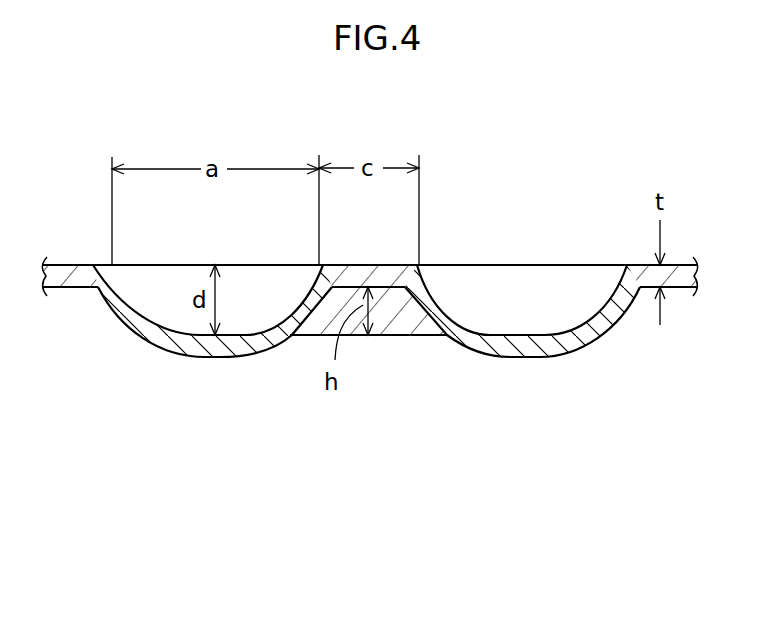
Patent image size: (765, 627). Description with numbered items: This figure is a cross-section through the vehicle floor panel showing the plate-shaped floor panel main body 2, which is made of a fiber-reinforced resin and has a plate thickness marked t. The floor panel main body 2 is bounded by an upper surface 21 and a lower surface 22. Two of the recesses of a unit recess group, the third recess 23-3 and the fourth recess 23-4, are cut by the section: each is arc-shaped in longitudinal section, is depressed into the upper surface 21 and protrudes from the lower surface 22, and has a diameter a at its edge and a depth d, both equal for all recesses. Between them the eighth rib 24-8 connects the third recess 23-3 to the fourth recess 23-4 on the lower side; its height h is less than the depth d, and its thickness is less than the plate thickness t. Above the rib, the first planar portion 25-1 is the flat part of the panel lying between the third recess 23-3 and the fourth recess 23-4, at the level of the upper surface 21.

The floor panel main body 2 is at (549, 206).
The upper surface 21 is at (68, 262).
The lower surface 22 is at (62, 290).
The third recess 23-3 is at (557, 326).
The fourth recess 23-4 is at (264, 324).
The eighth rib 24-8 is at (403, 315).
The first planar portion 25-1 is at (387, 265).